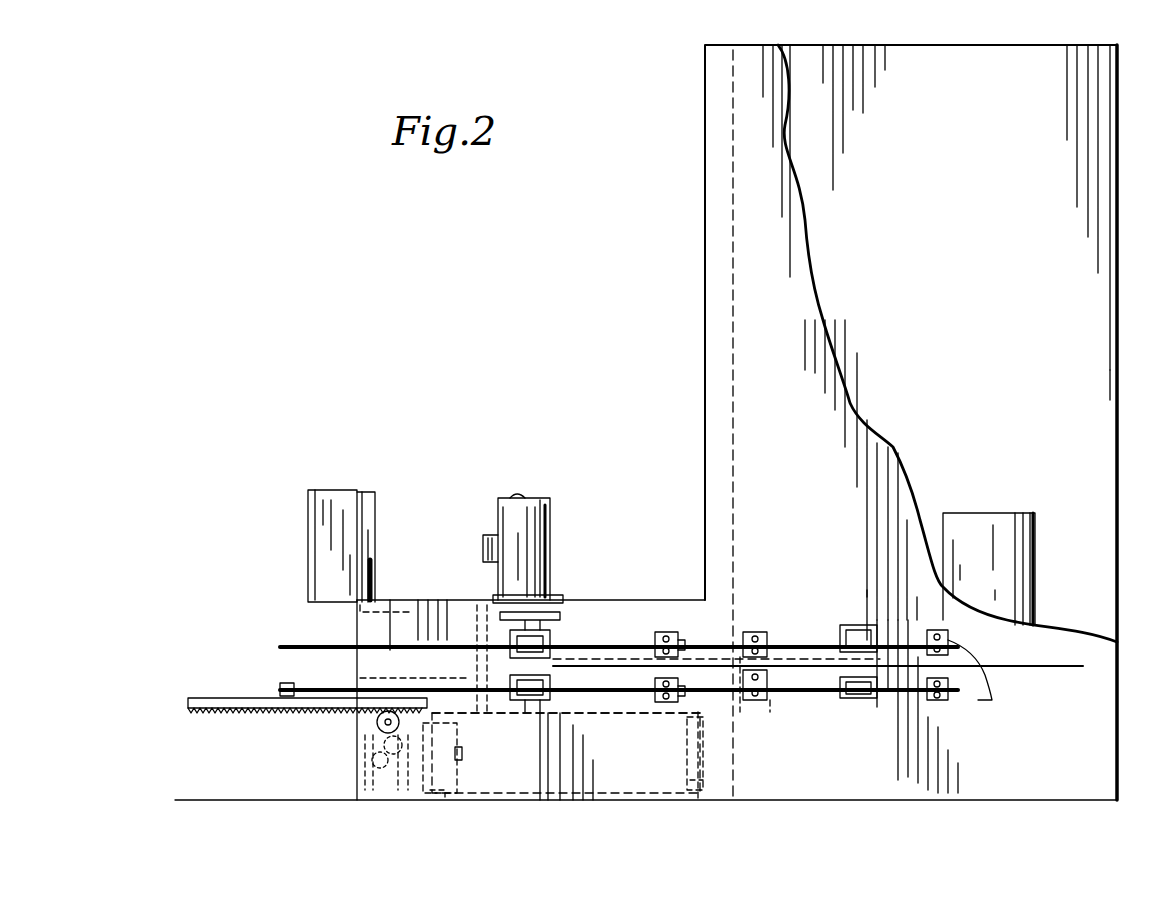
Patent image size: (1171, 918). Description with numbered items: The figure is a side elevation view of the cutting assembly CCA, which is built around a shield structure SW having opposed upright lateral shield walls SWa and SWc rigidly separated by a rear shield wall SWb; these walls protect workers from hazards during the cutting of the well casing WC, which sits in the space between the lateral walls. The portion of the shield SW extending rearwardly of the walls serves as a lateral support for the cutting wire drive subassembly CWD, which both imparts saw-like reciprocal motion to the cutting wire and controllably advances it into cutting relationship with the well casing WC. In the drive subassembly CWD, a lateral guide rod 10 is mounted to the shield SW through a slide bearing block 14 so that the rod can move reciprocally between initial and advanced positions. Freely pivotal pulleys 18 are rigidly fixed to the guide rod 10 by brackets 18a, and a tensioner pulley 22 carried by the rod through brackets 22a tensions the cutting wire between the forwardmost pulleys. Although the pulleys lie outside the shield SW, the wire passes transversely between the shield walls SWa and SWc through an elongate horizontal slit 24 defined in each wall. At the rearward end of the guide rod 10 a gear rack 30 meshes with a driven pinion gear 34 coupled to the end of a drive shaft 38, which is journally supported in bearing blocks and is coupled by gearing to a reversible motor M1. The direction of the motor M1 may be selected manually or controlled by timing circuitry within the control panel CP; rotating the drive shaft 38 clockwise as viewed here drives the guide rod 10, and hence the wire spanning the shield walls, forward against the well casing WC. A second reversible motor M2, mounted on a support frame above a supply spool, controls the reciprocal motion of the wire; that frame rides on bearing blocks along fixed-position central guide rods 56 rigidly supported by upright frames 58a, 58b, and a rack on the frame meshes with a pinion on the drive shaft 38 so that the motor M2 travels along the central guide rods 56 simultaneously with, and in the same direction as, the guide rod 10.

The lateral guide rod 10 is at (287, 684).
The slide bearing block 14 is at (547, 641).
The pulley 18 is at (644, 660).
The bracket 18a is at (690, 630).
The tensioner pulley 22 is at (736, 702).
The bracket 22a is at (770, 622).
The horizontal slit 24 is at (1070, 668).
The gear rack 30 is at (232, 712).
The driven pinion gear 34 is at (379, 718).
The drive shaft 38 is at (391, 728).
The central guide rod 56 is at (625, 722).
The upright frame 58a is at (440, 797).
The upright frame 58b is at (700, 777).
The reversible motor M1 is at (450, 769).
The reversible motor M2 is at (497, 512).
The control panel CP is at (306, 520).
The well casing WC is at (988, 539).
The shield structure SW is at (926, 419).
The lateral shield wall SWa is at (802, 453).
The rear shield wall SWb is at (735, 238).
The lateral shield wall SWc is at (1020, 139).
The cutting assembly CCA is at (652, 325).
The cutting wire drive subassembly CWD is at (642, 515).